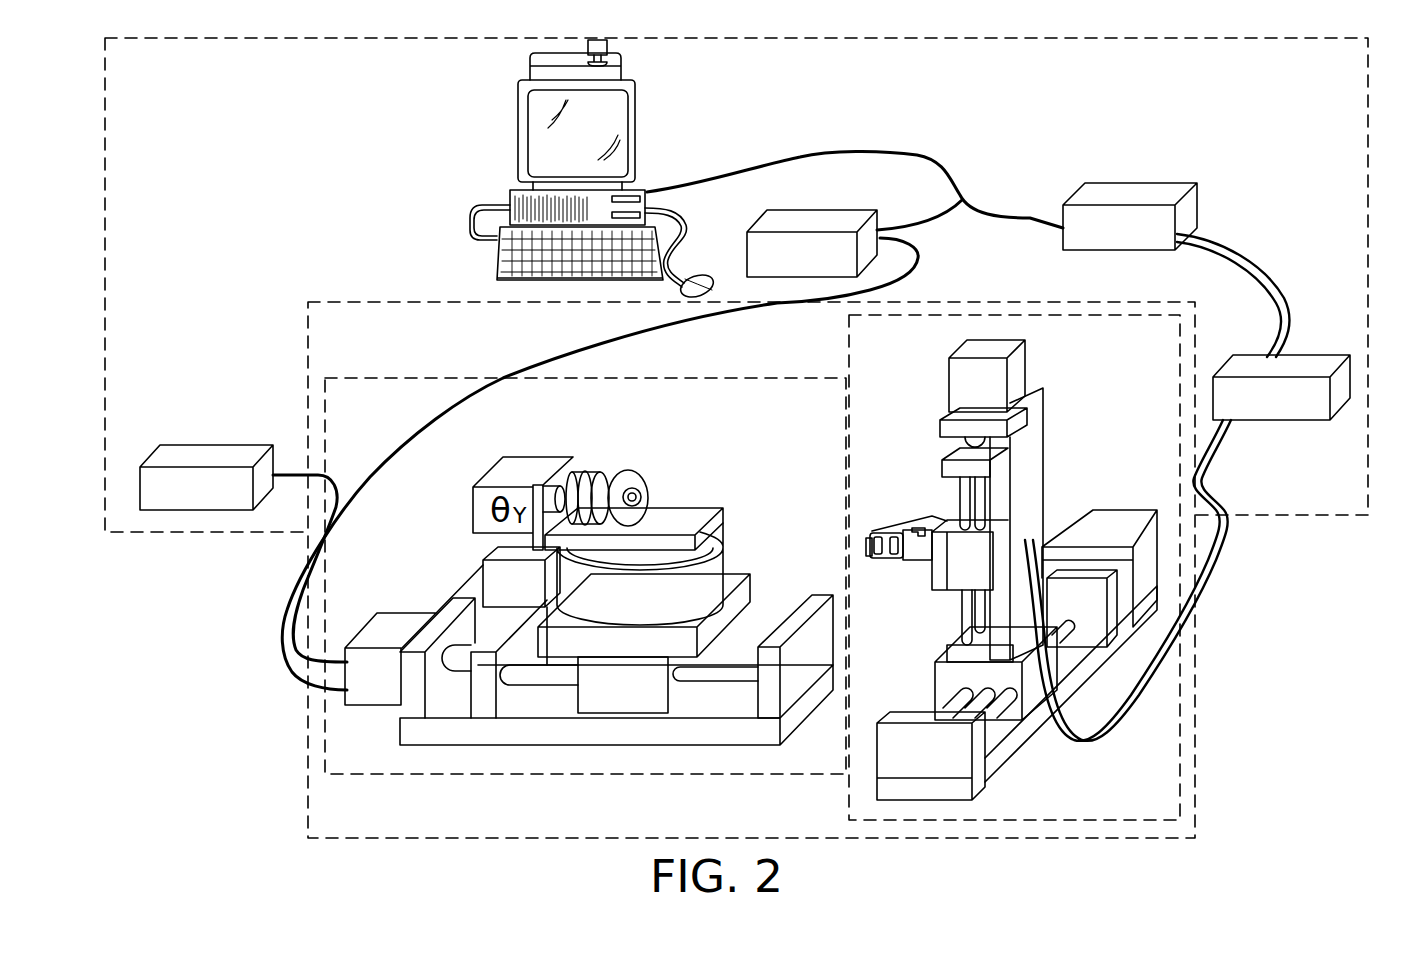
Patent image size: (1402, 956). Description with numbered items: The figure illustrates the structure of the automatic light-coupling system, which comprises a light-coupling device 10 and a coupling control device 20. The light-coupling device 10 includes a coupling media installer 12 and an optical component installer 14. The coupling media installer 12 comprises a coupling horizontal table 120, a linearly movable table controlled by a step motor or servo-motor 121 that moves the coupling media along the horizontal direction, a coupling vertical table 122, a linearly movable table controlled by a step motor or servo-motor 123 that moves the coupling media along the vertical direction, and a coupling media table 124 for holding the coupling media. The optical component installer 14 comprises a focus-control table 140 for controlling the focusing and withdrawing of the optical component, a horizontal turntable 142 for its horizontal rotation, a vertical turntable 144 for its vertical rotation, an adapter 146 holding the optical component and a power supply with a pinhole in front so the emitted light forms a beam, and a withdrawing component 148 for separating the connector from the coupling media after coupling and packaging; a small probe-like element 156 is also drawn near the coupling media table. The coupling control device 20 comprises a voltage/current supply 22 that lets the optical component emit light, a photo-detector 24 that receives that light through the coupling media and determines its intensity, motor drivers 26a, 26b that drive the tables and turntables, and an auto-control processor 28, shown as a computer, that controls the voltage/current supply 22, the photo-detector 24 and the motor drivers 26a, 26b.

The light-coupling device 10 is at (308, 778).
The coupling media installer 12 is at (847, 358).
The optical component installer 14 is at (372, 378).
The coupling control device 20 is at (1303, 515).
The voltage/current supply 22 is at (810, 210).
The photo-detector 24 is at (1135, 188).
The motor driver 26a is at (213, 450).
The motor driver 26b is at (1274, 412).
The auto-control processor 28 is at (518, 122).
The coupling horizontal table 120 is at (905, 715).
The step motor or servo-motor 121 is at (1120, 518).
The coupling vertical table 122 is at (953, 590).
The step motor or servo-motor 123 is at (958, 387).
The coupling media table 124 is at (913, 555).
The focus-control table 140 is at (645, 697).
The horizontal turntable 142 is at (700, 578).
The vertical turntable 144 is at (685, 518).
The adapter 146 is at (630, 473).
The withdrawing component 148 is at (868, 540).
The probe 156 is at (883, 538).